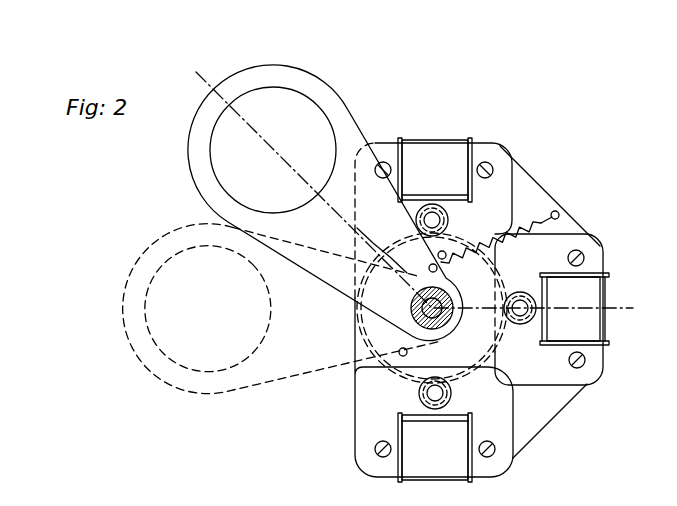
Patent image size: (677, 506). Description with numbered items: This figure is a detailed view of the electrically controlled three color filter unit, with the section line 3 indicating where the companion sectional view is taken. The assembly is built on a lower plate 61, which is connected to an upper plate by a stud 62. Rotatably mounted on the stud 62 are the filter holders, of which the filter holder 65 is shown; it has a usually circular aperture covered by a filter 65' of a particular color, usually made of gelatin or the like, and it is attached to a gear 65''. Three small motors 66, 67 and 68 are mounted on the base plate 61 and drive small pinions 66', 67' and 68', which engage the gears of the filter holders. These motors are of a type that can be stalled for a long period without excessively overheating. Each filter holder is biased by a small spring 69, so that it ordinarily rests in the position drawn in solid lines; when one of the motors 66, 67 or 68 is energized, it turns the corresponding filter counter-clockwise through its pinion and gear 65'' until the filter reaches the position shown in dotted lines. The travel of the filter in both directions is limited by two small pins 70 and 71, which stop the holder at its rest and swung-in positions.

The section line 3- 3 is at (413, 191).
The lower plate 61 is at (567, 398).
The stud 62 is at (420, 312).
The filter holder 65 is at (274, 283).
The filter 65' is at (243, 150).
The gear 65'' is at (468, 308).
The motor 66 is at (435, 459).
The pinion 66' is at (381, 393).
The motor 67 is at (594, 305).
The pinion 67' is at (521, 330).
The motor 68 is at (457, 158).
The pinion 68' is at (494, 200).
The spring 69 is at (557, 211).
The pin 70 is at (409, 353).
The pin 71 is at (445, 252).